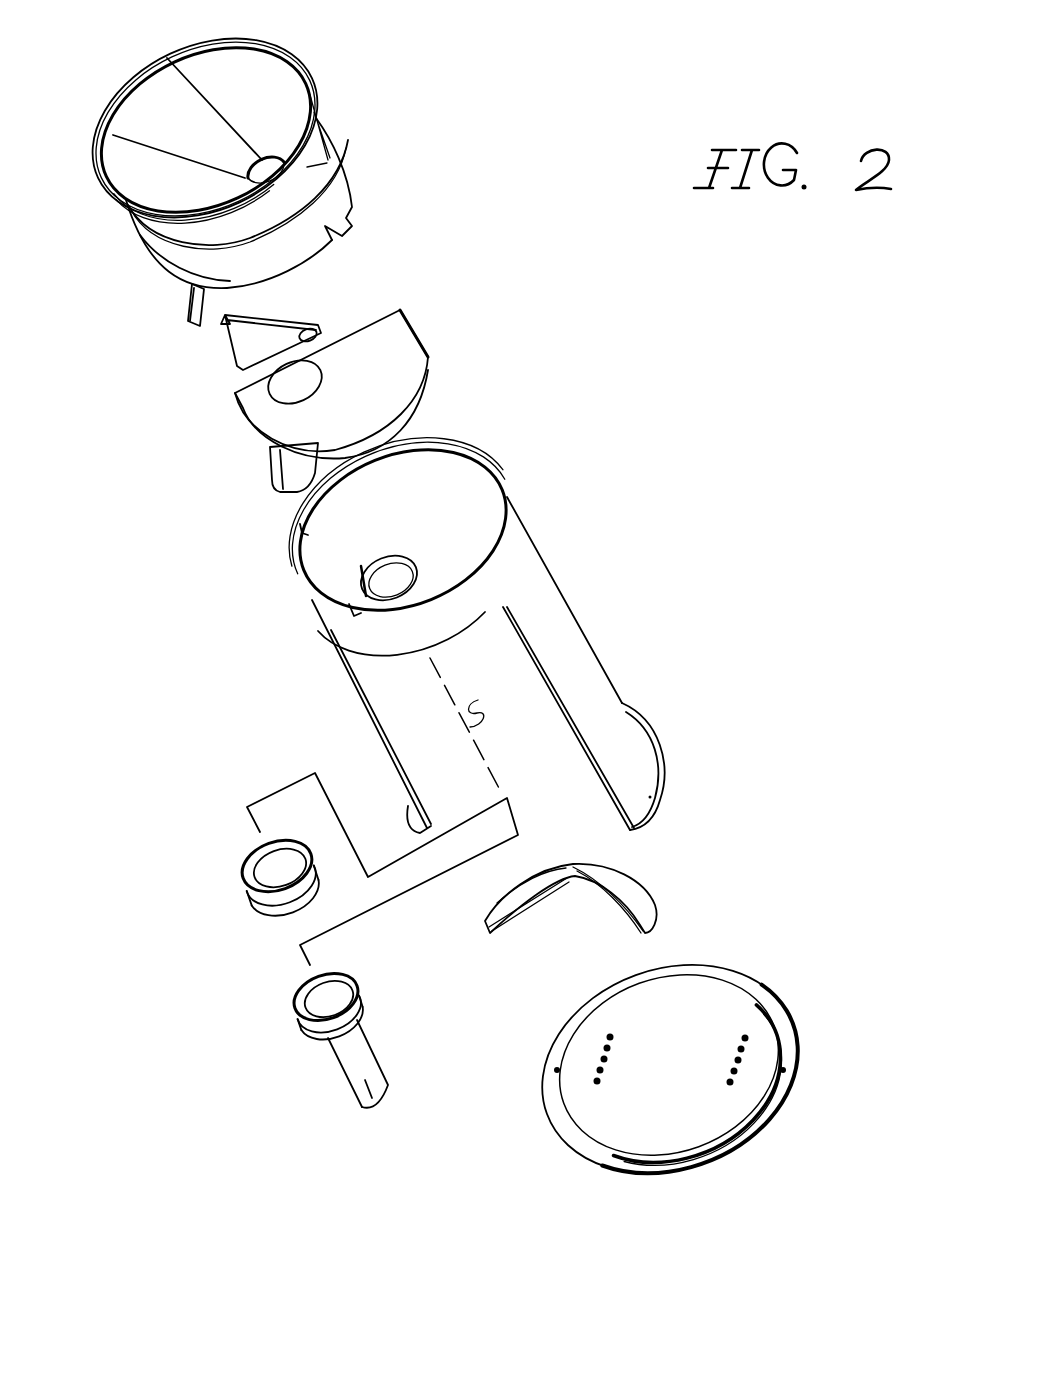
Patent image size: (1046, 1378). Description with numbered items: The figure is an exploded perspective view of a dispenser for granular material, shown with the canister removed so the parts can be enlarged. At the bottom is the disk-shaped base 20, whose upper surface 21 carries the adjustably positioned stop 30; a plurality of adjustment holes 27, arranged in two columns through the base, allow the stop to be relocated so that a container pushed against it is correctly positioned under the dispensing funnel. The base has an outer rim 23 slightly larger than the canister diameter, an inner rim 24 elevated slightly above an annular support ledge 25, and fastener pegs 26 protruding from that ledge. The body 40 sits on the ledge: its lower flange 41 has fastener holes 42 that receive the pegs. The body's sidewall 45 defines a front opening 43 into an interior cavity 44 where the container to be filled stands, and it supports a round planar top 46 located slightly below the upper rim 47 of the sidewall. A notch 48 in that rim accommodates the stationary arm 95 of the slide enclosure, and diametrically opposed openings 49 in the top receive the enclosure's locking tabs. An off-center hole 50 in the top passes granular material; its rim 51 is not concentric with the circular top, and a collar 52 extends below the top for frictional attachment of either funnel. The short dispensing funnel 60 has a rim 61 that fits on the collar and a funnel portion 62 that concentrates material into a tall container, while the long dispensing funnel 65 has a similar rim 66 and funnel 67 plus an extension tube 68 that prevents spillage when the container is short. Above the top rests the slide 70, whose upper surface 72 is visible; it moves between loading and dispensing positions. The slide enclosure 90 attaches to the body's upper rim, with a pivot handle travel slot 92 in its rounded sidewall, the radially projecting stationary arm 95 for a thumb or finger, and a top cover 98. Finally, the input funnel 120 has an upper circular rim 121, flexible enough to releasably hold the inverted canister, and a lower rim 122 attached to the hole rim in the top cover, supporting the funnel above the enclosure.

The base 20 is at (785, 973).
The upper surface 21 is at (667, 1035).
The outer rim 23 is at (795, 1094).
The inner rim 24 is at (730, 1138).
The annular support ledge 25 is at (787, 1042).
The fastener pegs 26 is at (558, 1070).
The adjustment holes 27 is at (610, 1032).
The stop 30 is at (677, 868).
The body 40 is at (623, 678).
The flange 41 is at (653, 748).
The fastener holes 42 is at (653, 795).
The front opening 43 is at (357, 684).
The interior cavity 44 is at (460, 713).
The sidewall 45 is at (560, 637).
The top 46 is at (458, 542).
The upper rim 47 is at (487, 461).
The notch 48 is at (350, 617).
The openings 49 is at (297, 533).
The hole 50 is at (392, 583).
The rim 51 is at (370, 565).
The collar 52 is at (365, 577).
The short dispensing funnel 60 is at (182, 905).
The rim 61 is at (258, 845).
The funnel portion 62 is at (265, 915).
The long dispensing funnel 65 is at (278, 1085).
The rim 66 is at (293, 997).
The funnel 67 is at (328, 1040).
The extension tube 68 is at (365, 1080).
The slide 70 is at (455, 352).
The upper surface 72 is at (397, 311).
The slide enclosure 90 is at (358, 182).
The pivot handle travel slot 92 is at (313, 252).
The stationary arm 95 is at (183, 328).
The top cover 98 is at (180, 230).
The input funnel 120 is at (378, 101).
The upper circular rim 121 is at (287, 57).
The lower rim 122 is at (167, 58).